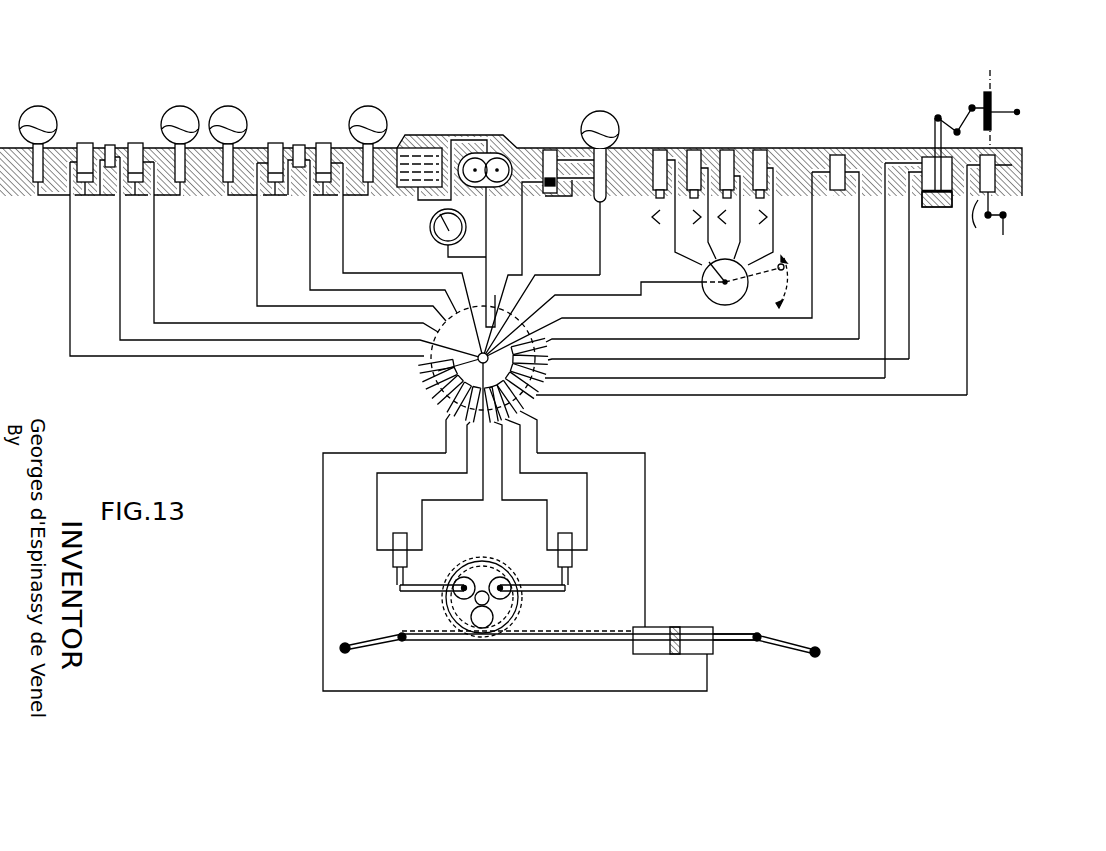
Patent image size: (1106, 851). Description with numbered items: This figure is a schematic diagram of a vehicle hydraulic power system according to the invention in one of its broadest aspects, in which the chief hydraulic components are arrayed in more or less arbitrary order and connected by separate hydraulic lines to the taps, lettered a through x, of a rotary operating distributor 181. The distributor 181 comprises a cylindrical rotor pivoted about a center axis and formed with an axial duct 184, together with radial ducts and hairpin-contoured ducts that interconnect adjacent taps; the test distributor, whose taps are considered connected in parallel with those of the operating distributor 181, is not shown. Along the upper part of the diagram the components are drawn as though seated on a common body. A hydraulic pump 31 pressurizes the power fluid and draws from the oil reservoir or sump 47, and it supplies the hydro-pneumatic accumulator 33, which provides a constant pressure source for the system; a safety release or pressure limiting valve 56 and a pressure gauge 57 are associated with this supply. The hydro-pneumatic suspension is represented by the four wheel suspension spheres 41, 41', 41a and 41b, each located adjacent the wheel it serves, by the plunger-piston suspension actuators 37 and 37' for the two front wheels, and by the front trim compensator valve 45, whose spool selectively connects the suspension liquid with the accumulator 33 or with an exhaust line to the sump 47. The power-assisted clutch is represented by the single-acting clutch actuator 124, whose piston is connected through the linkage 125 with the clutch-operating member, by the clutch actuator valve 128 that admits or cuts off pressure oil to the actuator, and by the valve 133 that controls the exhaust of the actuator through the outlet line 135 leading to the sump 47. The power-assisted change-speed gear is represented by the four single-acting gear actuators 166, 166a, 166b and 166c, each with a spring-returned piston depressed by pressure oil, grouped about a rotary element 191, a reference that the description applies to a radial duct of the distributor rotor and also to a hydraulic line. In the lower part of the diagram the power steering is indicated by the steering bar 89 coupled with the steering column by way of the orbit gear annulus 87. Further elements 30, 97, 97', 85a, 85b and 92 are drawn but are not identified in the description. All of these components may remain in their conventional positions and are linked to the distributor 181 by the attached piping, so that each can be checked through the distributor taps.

The suspension sphere 41 is at (44, 133).
The plunger piston 37 is at (92, 133).
The compensator valve 45 is at (112, 145).
The plunger piston 37' is at (140, 133).
The suspension sphere 41' is at (176, 133).
The suspension sphere 41a is at (240, 92).
The suspension sphere 41b is at (378, 95).
The sump 47 is at (420, 150).
The suction line 30 is at (451, 145).
The hydraulic pump 31 is at (491, 158).
The pressure gauge 57 is at (432, 222).
The safety release valve 56 is at (550, 152).
The hydro-pneumatic accumulator 33 is at (597, 114).
The gear actuator 166c is at (660, 150).
The actuator piston 166 is at (694, 150).
The gear actuator 166a is at (727, 150).
The gear actuator 166b is at (760, 150).
The radial duct 191 is at (784, 267).
The clutch actuator valve 128 is at (838, 155).
The hydraulic clutch actuator 124 is at (932, 158).
The linkage 125 is at (985, 98).
The outlet line 135 is at (1010, 162).
The valve 133 is at (989, 219).
The operating distributor 181 is at (450, 378).
The axial duct 184 is at (465, 357).
The servo valve 97 is at (379, 559).
The servo valve 97' is at (583, 559).
The pipe 85a is at (400, 588).
The pipe 85b is at (566, 588).
The orbit gear annulus 87 is at (508, 604).
The steering bar 89 is at (558, 640).
The lever 92 is at (382, 644).